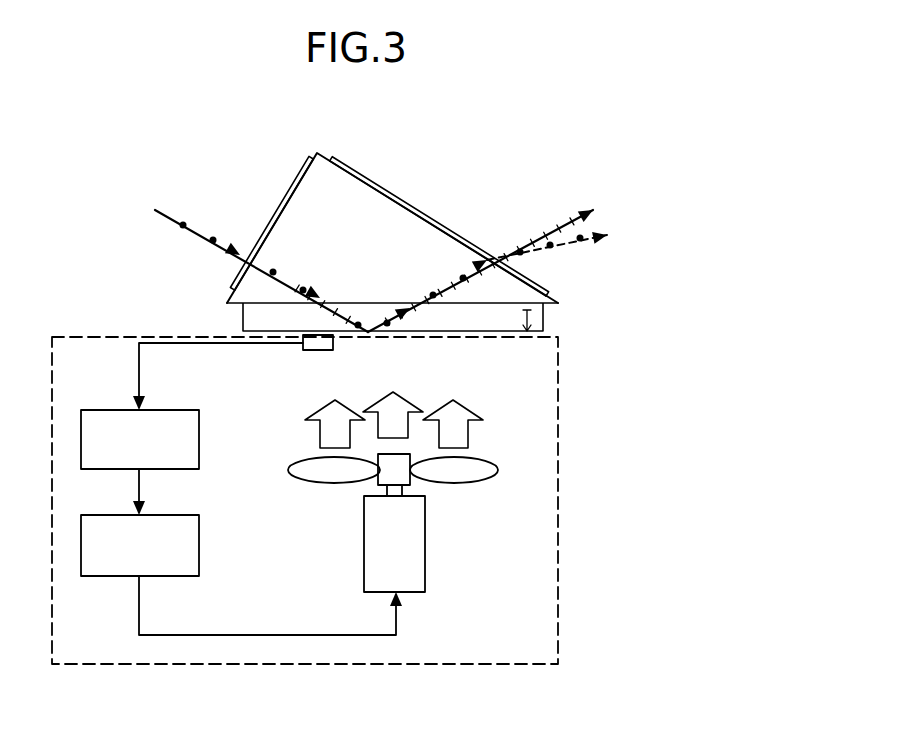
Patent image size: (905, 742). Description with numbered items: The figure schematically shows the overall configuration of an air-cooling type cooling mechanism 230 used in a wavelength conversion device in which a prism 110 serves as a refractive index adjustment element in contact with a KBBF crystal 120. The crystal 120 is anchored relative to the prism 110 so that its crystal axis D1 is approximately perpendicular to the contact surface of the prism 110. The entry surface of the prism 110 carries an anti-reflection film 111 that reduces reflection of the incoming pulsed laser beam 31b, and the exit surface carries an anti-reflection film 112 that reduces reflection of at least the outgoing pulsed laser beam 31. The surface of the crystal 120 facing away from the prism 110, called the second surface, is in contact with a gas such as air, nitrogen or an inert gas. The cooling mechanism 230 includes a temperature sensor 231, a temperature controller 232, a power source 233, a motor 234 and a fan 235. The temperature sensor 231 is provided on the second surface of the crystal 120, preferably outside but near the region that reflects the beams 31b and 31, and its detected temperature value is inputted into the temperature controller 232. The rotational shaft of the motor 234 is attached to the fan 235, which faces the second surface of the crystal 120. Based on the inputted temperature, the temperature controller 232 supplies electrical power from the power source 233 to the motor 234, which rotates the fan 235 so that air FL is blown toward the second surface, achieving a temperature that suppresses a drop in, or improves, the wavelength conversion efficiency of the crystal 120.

The prism 110 is at (353, 208).
The anti-reflection film 111 is at (277, 210).
The anti-reflection film 112 is at (428, 212).
The KBBF crystal 120 is at (243, 313).
The crystal axis D1 is at (546, 320).
The pulsed laser beam 31 is at (597, 215).
The pulsed laser beam 31b is at (172, 221).
The cooling mechanism 230 is at (560, 498).
The temperature sensor 231 is at (333, 350).
The temperature controller 232 is at (199, 437).
The power source 233 is at (199, 543).
The motor 234 is at (425, 560).
The fan 235 is at (477, 481).
The air FL is at (472, 405).